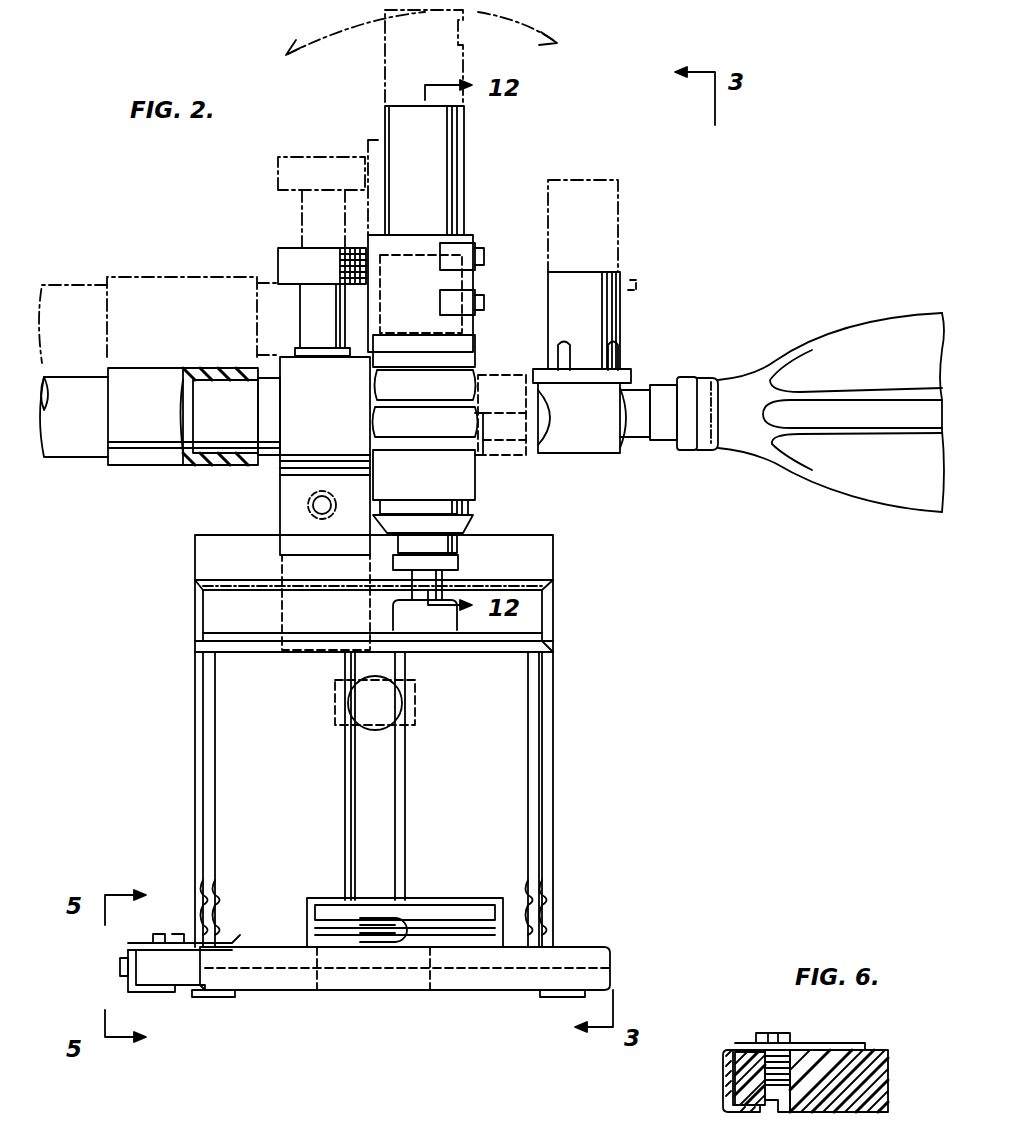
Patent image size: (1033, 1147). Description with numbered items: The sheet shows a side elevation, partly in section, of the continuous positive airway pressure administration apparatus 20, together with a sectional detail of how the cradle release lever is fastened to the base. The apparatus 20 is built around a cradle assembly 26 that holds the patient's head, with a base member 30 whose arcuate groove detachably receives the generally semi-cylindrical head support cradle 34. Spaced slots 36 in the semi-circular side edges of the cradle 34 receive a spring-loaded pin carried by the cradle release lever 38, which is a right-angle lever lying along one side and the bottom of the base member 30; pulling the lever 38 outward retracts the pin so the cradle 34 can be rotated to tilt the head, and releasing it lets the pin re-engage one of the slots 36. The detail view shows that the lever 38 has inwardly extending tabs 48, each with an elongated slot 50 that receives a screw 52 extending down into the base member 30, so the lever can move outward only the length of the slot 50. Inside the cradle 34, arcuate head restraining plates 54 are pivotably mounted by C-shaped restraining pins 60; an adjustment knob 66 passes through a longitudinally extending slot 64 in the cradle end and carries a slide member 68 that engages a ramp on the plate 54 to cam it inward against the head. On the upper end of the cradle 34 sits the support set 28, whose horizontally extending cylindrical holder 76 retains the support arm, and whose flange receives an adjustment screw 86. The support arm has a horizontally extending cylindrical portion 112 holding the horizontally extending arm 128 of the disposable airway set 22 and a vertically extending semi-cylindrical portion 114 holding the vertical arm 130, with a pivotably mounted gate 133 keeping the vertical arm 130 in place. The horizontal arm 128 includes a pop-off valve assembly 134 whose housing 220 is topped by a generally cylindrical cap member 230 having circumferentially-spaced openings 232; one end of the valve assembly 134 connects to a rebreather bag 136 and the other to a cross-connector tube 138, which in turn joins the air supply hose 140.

In FIG. 2, the continuous positive airway pressure administration apparatus 20 is at (636, 604).
In FIG. 2, the disposable airway set 22 is at (665, 282).
In FIG. 2, the cradle assembly 26 is at (575, 742).
In FIG. 2, the support set 28 is at (276, 262).
In FIG. 2, the base member 30 is at (598, 962).
In FIG. 6, the base member 30 is at (872, 1100).
In FIG. 2, the head support cradle 34 is at (520, 798).
In FIG. 2, the slots 36 is at (208, 890).
In FIG. 2, the cradle release lever 38 is at (128, 983).
In FIG. 6, the cradle release lever 38 is at (723, 1096).
In FIG. 2, the inwardly extending tabs 48 is at (224, 940).
In FIG. 6, the elongated slot 50 is at (820, 1043).
In FIG. 2, the screw 52 is at (150, 940).
In FIG. 6, the screw 52 is at (760, 1033).
In FIG. 2, the head restraining plates 54 is at (210, 642).
In FIG. 2, the restraining pin 60 is at (412, 920).
In FIG. 2, the longitudinally extending slot 64 is at (400, 802).
In FIG. 2, the adjustment knob 66 is at (378, 716).
In FIG. 2, the slide member 68 is at (412, 706).
In FIG. 2, the cylindrical holder 76 is at (325, 503).
In FIG. 2, the adjustment screw 86 is at (320, 158).
In FIG. 2, the horizontally extending cylindrical portion 112 is at (480, 468).
In FIG. 2, the vertically extending semi-cylindrical portion 114 is at (420, 229).
In FIG. 2, the horizontally extending arm 128 is at (503, 362).
In FIG. 2, the vertically extending arm 130 is at (485, 505).
In FIG. 2, the pivotably mounted gate 133 is at (470, 275).
In FIG. 2, the pop-off valve assembly 134 is at (600, 262).
In FIG. 2, the rebreather bag 136 is at (862, 490).
In FIG. 2, the cross-connector tube 138 is at (540, 440).
In FIG. 2, the air supply hose 140 is at (160, 277).
In FIG. 2, the housing 220 is at (598, 440).
In FIG. 2, the cap member 230 is at (622, 311).
In FIG. 2, the circumferentially-spaced openings 232 is at (628, 350).